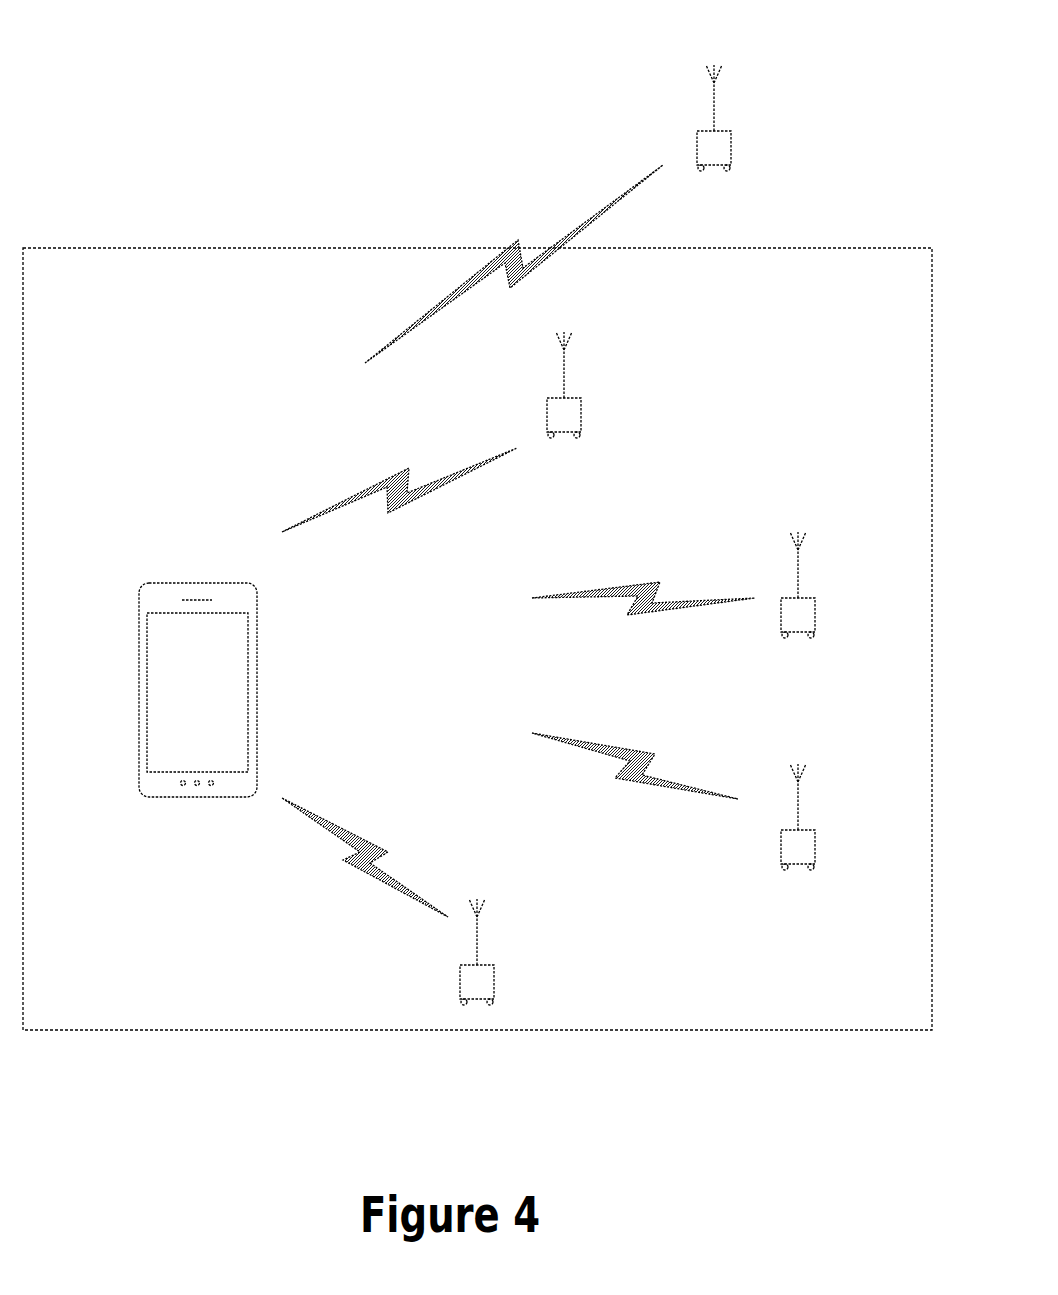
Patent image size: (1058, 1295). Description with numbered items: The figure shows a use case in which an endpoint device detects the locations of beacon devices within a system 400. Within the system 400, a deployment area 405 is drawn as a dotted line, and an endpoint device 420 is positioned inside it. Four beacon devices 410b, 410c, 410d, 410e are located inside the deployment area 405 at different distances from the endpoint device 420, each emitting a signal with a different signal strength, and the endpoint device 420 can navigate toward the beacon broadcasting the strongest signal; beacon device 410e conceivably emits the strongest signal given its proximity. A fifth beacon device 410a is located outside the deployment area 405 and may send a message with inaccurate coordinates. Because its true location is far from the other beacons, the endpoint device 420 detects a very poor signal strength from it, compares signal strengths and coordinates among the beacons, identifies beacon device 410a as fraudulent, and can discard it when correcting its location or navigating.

The system 400 is at (220, 92).
The deployment area 405 is at (477, 620).
The beacon device 410a is at (590, 214).
The beacon device 410b is at (476, 432).
The beacon device 410c is at (710, 585).
The beacon device 410d is at (710, 801).
The beacon device 410e is at (388, 901).
The endpoint device 420 is at (167, 690).